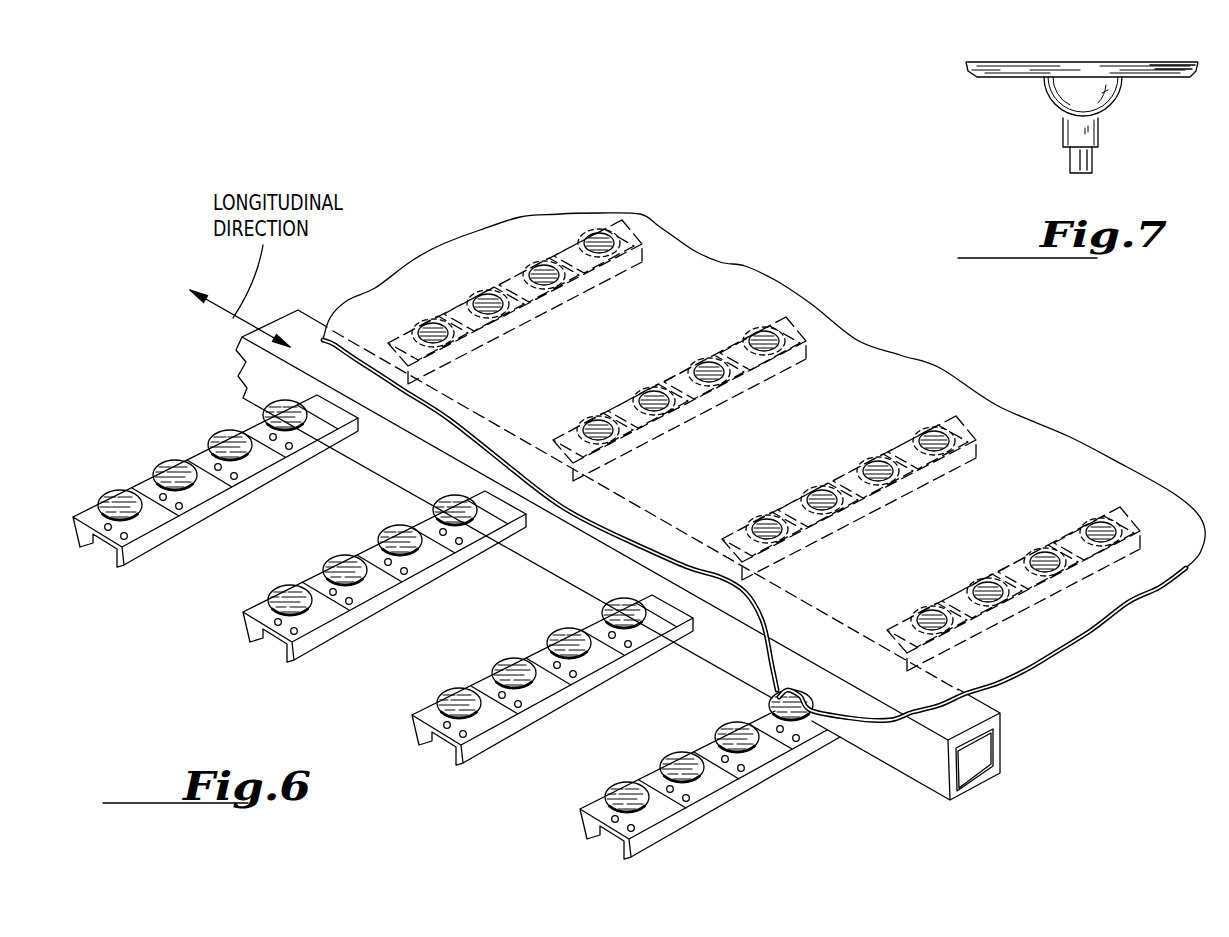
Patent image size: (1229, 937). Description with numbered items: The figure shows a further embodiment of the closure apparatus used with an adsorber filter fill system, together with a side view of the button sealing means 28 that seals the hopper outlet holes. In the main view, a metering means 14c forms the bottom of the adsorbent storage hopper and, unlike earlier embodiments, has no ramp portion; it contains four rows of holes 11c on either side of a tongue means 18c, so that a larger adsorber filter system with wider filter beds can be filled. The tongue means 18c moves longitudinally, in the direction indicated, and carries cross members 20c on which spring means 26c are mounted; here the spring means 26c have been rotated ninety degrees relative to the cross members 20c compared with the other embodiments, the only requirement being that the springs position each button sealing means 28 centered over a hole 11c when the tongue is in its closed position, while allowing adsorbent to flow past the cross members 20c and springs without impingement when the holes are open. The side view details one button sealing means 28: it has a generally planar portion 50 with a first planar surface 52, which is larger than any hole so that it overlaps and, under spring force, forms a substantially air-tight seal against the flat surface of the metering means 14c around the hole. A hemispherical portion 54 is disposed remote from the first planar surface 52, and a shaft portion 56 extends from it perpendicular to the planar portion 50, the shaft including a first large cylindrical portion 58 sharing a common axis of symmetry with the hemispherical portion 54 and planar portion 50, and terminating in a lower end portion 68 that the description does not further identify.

In FIG. 6, the holes 11c is at (787, 445).
In FIG. 6, the metering means 14c is at (764, 467).
In FIG. 6, the tongue means 18c is at (670, 555).
In FIG. 6, the cross members 20c is at (456, 627).
In FIG. 6, the spring means 26c is at (455, 606).
In FIG. 7, the button sealing means 28 is at (1040, 100).
In FIG. 7, the planar portion 50 is at (1157, 70).
In FIG. 7, the first planar surface 52 is at (1068, 62).
In FIG. 7, the hemispherical portion 54 is at (1120, 105).
In FIG. 7, the shaft portion 56 is at (1062, 135).
In FIG. 7, the first large cylindrical portion 58 is at (1100, 135).
In FIG. 7, the stem 68 is at (1078, 166).